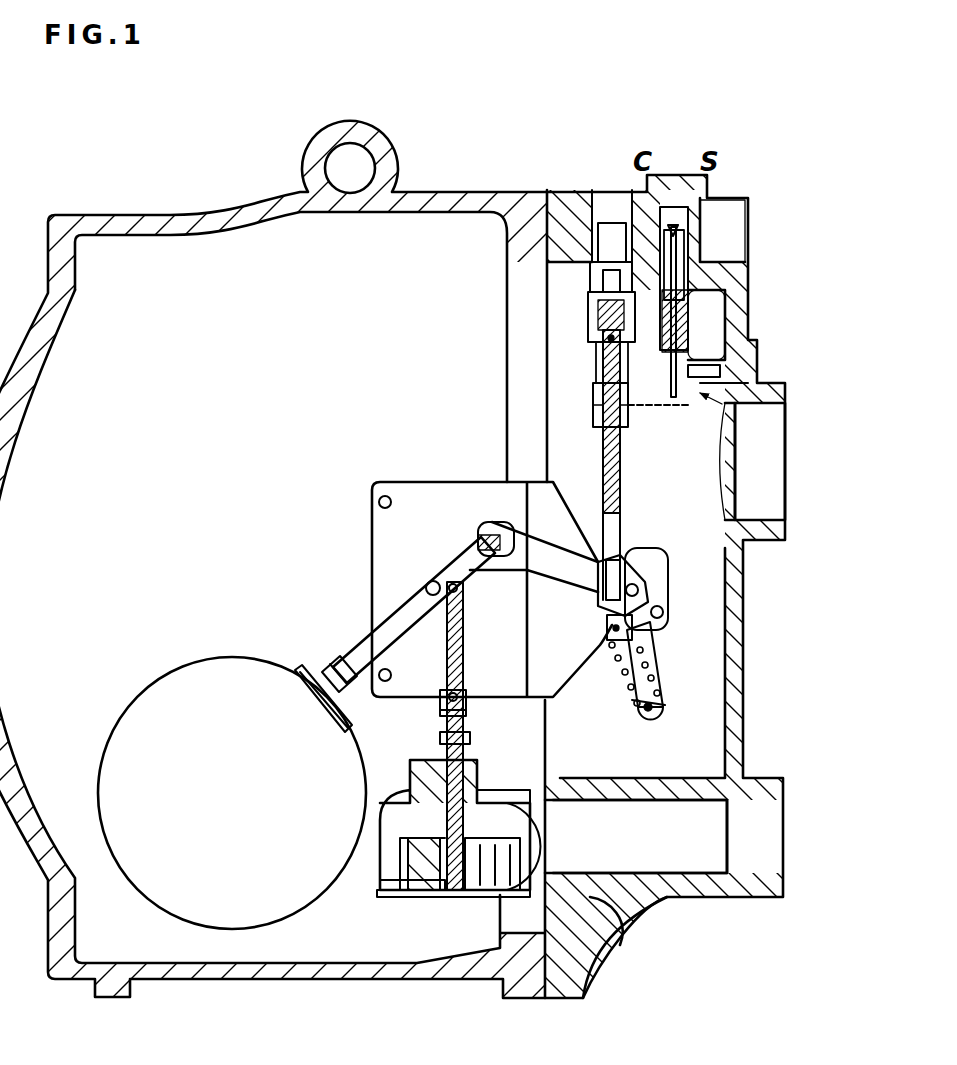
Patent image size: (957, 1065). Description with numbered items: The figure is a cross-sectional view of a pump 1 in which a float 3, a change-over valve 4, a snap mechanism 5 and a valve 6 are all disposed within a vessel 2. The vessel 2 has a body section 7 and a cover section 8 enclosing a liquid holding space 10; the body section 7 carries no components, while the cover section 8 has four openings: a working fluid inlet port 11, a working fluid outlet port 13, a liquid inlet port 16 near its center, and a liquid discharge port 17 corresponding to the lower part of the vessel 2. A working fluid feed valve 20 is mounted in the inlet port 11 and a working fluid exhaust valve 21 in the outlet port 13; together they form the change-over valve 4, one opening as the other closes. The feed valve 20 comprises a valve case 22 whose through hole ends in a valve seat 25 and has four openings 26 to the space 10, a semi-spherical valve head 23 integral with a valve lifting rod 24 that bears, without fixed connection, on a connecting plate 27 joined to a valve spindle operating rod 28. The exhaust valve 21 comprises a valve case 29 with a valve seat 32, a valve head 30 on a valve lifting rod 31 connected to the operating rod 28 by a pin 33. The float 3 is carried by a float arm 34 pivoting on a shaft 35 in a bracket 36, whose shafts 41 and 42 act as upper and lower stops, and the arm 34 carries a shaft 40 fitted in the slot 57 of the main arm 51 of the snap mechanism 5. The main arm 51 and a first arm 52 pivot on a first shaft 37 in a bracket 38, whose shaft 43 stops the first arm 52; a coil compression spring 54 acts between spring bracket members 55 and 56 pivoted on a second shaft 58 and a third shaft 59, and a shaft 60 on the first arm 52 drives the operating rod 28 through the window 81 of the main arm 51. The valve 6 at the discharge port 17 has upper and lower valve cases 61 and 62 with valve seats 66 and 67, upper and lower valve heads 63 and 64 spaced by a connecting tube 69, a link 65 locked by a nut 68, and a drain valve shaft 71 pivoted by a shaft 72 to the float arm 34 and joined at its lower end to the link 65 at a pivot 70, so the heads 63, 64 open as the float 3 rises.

The pump 1 is at (462, 160).
The vessel 2 is at (218, 185).
The float 3 is at (140, 692).
The change-over valve 4 is at (746, 413).
The snap mechanism 5 is at (680, 553).
The valve 6 is at (455, 912).
The body section 7 is at (122, 226).
The cover section 8 is at (735, 200).
The liquid holding space 10 is at (136, 337).
The working fluid inlet port 11 is at (735, 225).
The working fluid outlet port 13 is at (612, 196).
The liquid inlet port 16 is at (768, 455).
The liquid discharge port 17 is at (760, 833).
The working fluid feed valve 20 is at (705, 330).
The working fluid exhaust valve 21 is at (580, 320).
The valve case 22 is at (688, 272).
The valve head 23 is at (673, 215).
The valve lifting rod 24 is at (700, 355).
The valve seat 25 is at (700, 246).
The openings 26 is at (692, 296).
The connecting plate 27 is at (590, 405).
The valve spindle operating rod 28 is at (612, 460).
The valve case 29 is at (600, 330).
The valve head 30 is at (600, 300).
The valve lifting rod 31 is at (600, 355).
The valve seat 32 is at (590, 275).
The pin 33 is at (600, 375).
The float arm 34 is at (405, 605).
The shaft 35 is at (424, 584).
The bracket 36 is at (388, 522).
The first shaft 37 is at (640, 590).
The bracket 38 is at (663, 612).
The shaft 40 is at (478, 532).
The shaft 41 is at (378, 500).
The shaft 42 is at (380, 665).
The shaft 43 is at (655, 630).
The main arm 51 is at (538, 553).
The first arm 52 is at (660, 678).
The coil compression spring 54 is at (665, 703).
The spring bracket member 55 is at (665, 655).
The spring bracket member 56 is at (660, 720).
The slot 57 is at (498, 545).
The second shaft 58 is at (605, 625).
The third shaft 59 is at (649, 713).
The shaft 60 is at (605, 592).
The upper valve case 61 is at (378, 878).
The lower valve case 62 is at (387, 900).
The upper valve head 63 is at (420, 762).
The lower valve head 64 is at (430, 905).
The link 65 is at (470, 728).
The upper valve seat 66 is at (510, 800).
The lower valve seat 67 is at (505, 872).
The nut 68 is at (470, 743).
The connecting tube 69 is at (520, 818).
The pin 70 is at (465, 694).
The drain valve shaft 71 is at (465, 650).
The shaft 72 is at (462, 588).
The window 81 is at (628, 572).